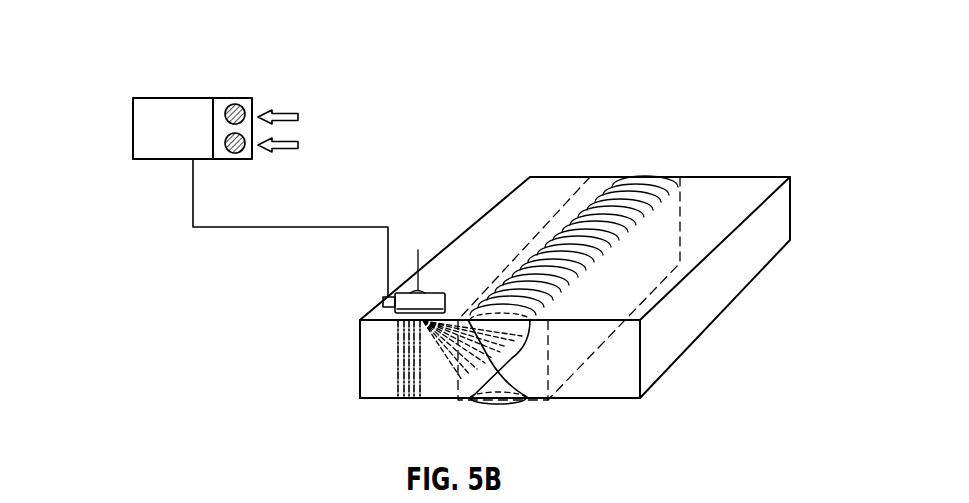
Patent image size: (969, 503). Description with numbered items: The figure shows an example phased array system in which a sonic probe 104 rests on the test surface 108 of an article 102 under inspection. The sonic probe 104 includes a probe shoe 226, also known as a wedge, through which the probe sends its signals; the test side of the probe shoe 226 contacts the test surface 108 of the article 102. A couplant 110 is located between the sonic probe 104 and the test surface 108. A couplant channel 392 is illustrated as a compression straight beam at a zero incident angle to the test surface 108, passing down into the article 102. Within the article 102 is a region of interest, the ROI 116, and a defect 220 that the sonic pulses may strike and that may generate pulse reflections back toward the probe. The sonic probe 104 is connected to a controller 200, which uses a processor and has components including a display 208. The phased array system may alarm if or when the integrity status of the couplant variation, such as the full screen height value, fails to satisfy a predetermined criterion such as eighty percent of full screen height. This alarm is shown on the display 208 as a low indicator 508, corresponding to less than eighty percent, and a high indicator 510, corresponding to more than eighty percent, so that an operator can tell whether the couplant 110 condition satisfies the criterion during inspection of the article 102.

The controller 200 is at (133, 127).
The display 208 is at (233, 98).
The low indicator 508 is at (515, 103).
The high indicator 510 is at (513, 138).
The article 102 is at (578, 177).
The test surface 108 is at (480, 258).
The couplant 110 is at (365, 320).
The ROI 116 is at (680, 197).
The sonic probe 104 is at (383, 300).
The probe shoe 226 is at (418, 250).
The couplant channel 392 is at (398, 348).
The defect 220 is at (520, 347).